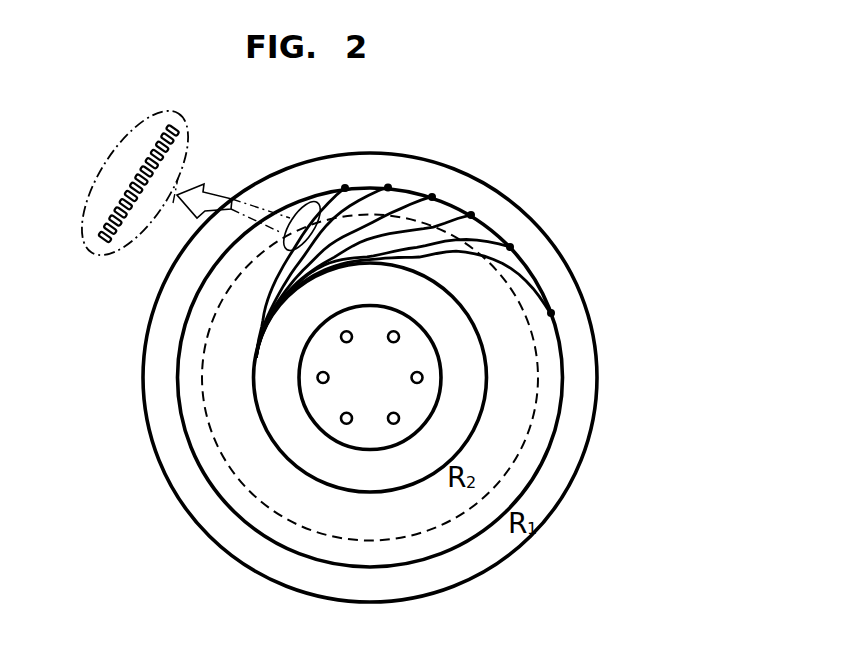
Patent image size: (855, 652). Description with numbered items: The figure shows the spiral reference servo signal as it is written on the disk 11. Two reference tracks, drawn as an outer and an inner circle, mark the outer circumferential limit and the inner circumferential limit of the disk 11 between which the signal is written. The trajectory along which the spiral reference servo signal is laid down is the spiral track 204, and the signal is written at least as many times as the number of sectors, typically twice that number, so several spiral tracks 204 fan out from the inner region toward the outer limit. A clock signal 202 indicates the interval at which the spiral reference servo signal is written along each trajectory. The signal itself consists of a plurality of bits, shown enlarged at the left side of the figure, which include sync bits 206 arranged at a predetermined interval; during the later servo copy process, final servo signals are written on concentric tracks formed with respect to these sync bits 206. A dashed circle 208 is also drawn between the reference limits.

The disk 11 is at (597, 417).
The clock signal 202 is at (555, 314).
The spiral track 204 is at (500, 279).
The sync bits 206 is at (138, 150).
The boundary between radii R1 and R2 208 is at (535, 347).